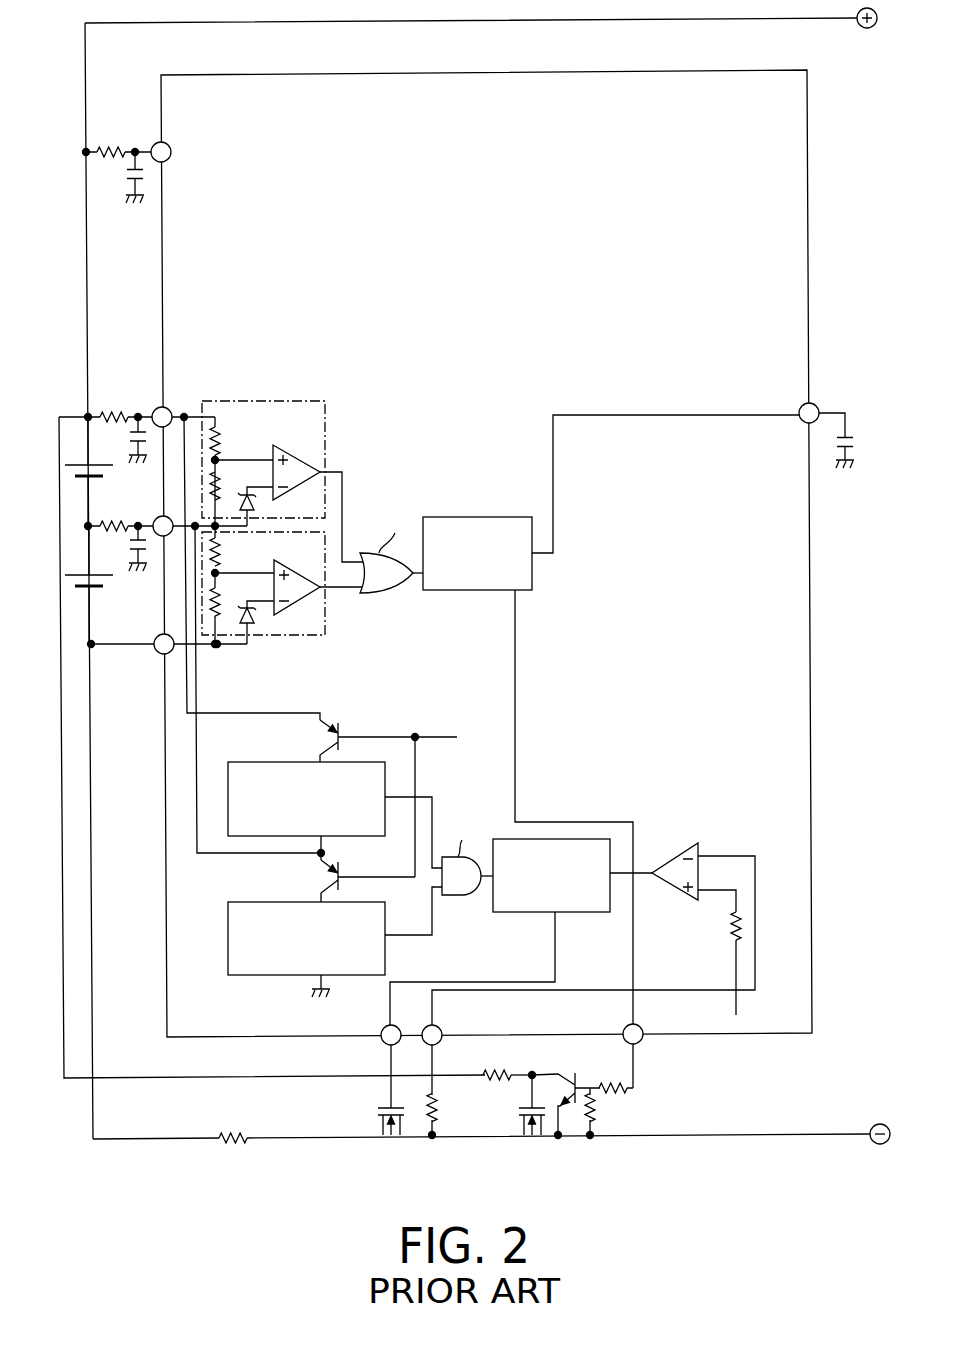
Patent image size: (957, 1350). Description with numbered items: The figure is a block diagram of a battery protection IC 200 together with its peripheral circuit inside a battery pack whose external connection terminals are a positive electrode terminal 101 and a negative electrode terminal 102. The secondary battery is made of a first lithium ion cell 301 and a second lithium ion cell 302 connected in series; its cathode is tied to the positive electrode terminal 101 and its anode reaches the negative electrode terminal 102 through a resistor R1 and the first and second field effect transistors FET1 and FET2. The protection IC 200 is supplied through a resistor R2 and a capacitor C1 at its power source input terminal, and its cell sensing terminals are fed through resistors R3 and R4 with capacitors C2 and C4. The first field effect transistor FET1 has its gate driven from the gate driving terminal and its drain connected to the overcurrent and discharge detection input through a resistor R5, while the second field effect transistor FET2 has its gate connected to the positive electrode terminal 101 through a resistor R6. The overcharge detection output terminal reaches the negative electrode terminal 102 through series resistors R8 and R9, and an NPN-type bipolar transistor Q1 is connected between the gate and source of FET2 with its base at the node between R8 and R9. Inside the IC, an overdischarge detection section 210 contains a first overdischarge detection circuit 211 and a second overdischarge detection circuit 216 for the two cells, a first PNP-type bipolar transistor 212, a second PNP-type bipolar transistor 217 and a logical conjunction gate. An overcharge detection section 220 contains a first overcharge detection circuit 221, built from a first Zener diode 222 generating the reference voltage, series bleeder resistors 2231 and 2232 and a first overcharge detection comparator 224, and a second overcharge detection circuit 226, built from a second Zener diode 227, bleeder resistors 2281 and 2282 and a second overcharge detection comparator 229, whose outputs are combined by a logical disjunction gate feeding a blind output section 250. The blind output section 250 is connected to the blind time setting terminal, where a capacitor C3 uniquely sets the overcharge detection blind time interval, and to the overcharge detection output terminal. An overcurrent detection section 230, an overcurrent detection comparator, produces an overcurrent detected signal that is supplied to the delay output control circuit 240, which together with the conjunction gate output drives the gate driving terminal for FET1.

The positive electrode terminal 101 is at (864, 28).
The negative electrode terminal 102 is at (880, 1144).
The battery protection IC 200 is at (811, 645).
The overdischarge detection section 210 is at (214, 940).
The first overdischarge detection circuit 211 is at (322, 762).
The first PNP-type bipolar transistor 212 is at (341, 728).
The second overdischarge detection circuit 216 is at (266, 976).
The second PNP-type bipolar transistor 217 is at (320, 880).
The overcharge detection section 220 is at (364, 432).
The first overcharge detection circuit 221 is at (287, 398).
The first Zener diode 222 is at (258, 500).
The first overcharge detection comparator 224 is at (296, 447).
The second overcharge detection circuit 226 is at (331, 617).
The second Zener diode 227 is at (258, 614).
The second overcharge detection comparator 229 is at (296, 568).
The bleeder resistor 2231 is at (222, 445).
The bleeder resistor 2232 is at (222, 493).
The bleeder resistor 2281 is at (222, 561).
The bleeder resistor 2282 is at (222, 610).
The overcurrent detection section 230 is at (686, 853).
The delay output control circuit 240 is at (530, 913).
The blind output section 250 is at (478, 592).
The first lithium ion cell 301 is at (80, 460).
The second lithium ion cell 302 is at (104, 582).
The resistor R1 is at (232, 1145).
The resistor R2 is at (108, 160).
The resistor R3 is at (114, 407).
The resistor R4 is at (116, 522).
The resistor R5 is at (440, 1108).
The resistor R6 is at (492, 1070).
The resistor R8 is at (630, 1090).
The resistor R9 is at (598, 1107).
The capacitor C1 is at (122, 177).
The capacitor C2 is at (128, 440).
The capacitor C3 is at (858, 440).
The capacitor C4 is at (128, 548).
The first field effect transistor FET1 is at (396, 1137).
The second field effect transistor FET2 is at (529, 1137).
The NPN-type bipolar transistor Q1 is at (563, 1073).